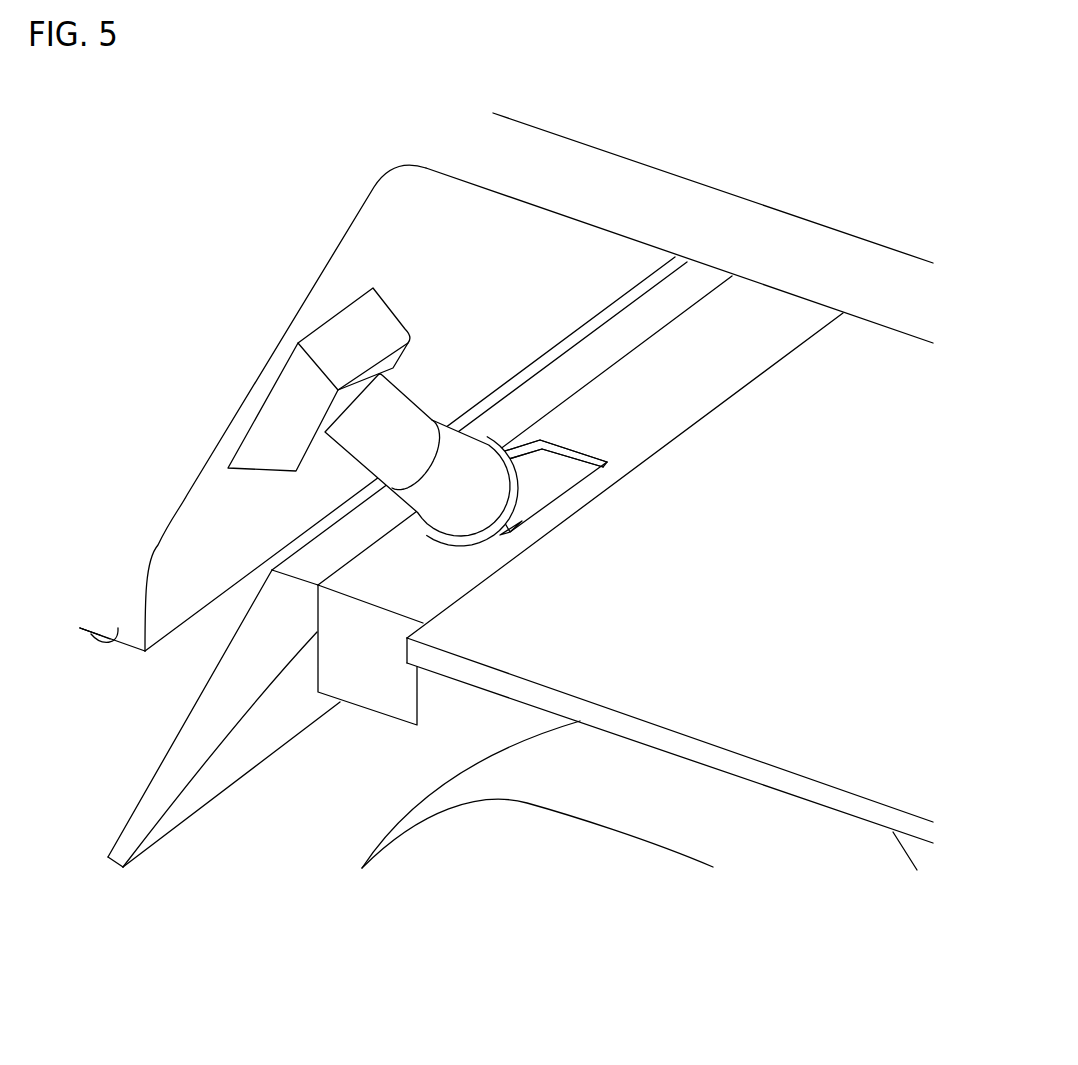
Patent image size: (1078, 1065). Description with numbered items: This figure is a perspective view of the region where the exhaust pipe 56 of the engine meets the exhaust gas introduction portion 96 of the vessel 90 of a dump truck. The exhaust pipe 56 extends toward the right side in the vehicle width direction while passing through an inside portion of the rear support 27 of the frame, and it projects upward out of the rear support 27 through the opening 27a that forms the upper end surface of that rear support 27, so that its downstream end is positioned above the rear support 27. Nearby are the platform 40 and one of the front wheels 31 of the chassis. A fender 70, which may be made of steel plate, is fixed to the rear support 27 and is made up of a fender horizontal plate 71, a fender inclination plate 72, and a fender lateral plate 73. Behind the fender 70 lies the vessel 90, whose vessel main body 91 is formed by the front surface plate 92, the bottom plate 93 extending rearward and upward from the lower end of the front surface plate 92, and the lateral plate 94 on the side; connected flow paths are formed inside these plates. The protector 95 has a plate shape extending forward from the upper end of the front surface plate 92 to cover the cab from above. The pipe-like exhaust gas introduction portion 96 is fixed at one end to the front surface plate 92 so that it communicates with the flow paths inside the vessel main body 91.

The rear support 27 is at (707, 388).
The opening 27a is at (570, 466).
The front wheels 31 is at (455, 802).
The platform 40 is at (763, 730).
The exhaust pipe 56 is at (555, 477).
The fender 70 is at (152, 849).
The fender horizontal plate 71 is at (313, 557).
The fender inclination plate 72 is at (205, 790).
The fender lateral plate 73 is at (147, 810).
The vessel 90 is at (63, 646).
The vessel main body 91 is at (93, 633).
The front surface plate 92 is at (185, 540).
The bottom plate 93 is at (118, 636).
The lateral plate 94 is at (129, 628).
The protector 95 is at (737, 228).
The exhaust gas introduction portion 96 is at (442, 442).